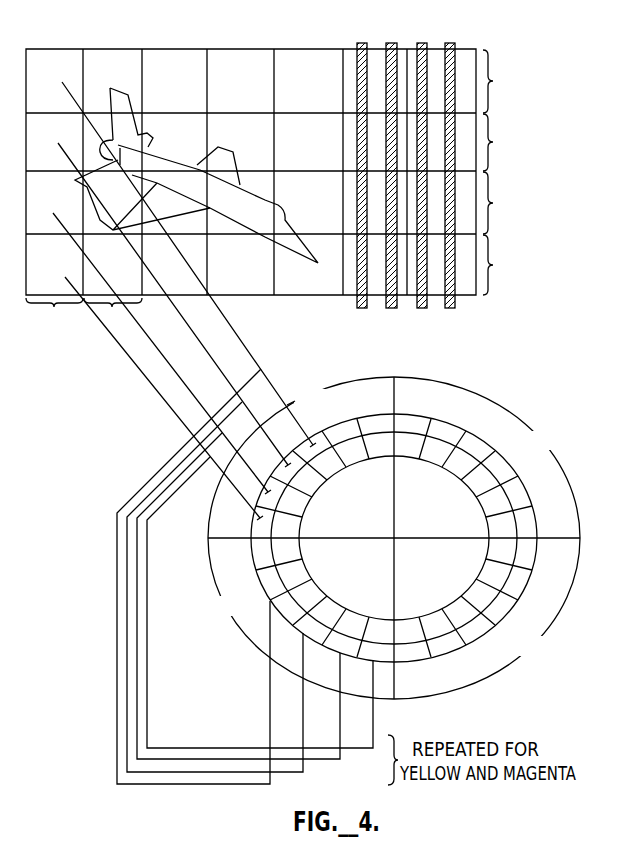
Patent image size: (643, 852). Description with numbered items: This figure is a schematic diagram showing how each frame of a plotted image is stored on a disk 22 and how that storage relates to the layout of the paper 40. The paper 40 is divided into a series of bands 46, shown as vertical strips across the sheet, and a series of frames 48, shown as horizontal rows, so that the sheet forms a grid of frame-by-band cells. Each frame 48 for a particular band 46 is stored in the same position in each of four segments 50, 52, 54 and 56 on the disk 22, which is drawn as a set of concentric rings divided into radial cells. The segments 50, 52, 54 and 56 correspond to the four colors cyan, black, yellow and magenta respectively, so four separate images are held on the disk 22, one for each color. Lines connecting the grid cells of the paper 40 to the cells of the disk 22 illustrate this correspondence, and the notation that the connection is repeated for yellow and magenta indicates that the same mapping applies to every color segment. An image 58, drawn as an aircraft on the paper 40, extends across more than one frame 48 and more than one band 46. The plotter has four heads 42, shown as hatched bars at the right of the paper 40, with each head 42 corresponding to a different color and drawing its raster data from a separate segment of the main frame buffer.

The disk 22 is at (394, 538).
The paper 40 is at (250, 48).
The heads 42 is at (461, 23).
The bands 46 is at (84, 315).
The frames 48 is at (498, 172).
The segment 50 is at (218, 515).
The segment 52 is at (252, 636).
The segment 54 is at (548, 609).
The segment 56 is at (507, 428).
The image 58 is at (168, 152).